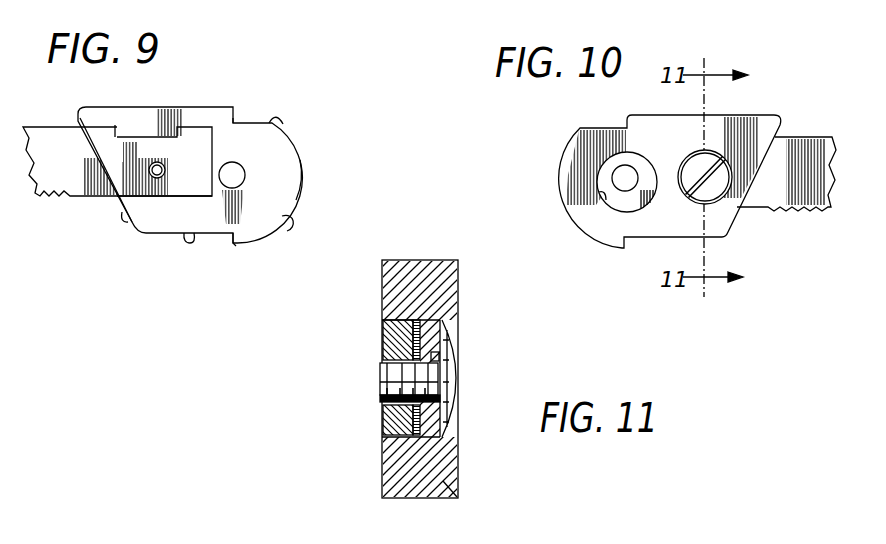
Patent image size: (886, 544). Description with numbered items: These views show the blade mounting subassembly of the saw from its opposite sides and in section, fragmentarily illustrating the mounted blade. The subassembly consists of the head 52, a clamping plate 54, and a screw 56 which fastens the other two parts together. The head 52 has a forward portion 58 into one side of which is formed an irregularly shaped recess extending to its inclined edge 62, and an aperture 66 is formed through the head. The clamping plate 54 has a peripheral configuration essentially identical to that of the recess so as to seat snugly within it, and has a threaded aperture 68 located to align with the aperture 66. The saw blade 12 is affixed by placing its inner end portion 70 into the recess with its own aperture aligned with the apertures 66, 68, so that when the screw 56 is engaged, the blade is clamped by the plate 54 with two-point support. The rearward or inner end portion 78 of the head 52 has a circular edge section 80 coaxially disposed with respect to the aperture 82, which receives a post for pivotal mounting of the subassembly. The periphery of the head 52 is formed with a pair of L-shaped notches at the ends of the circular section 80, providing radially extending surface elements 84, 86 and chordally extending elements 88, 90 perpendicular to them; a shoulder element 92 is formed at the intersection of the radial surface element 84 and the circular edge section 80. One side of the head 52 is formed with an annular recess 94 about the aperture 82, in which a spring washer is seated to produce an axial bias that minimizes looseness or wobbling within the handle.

In FIG. 9, the saw blade 12 is at (66, 203).
In FIG. 10, the saw blade 12 is at (786, 174).
In FIG. 9, the head 52 is at (307, 157).
In FIG. 10, the head 52 is at (670, 181).
In FIG. 11, the head 52 is at (447, 228).
In FIG. 9, the clamping plate 54 is at (110, 151).
In FIG. 11, the clamping plate 54 is at (383, 415).
In FIG. 11, the screw 56 is at (458, 401).
In FIG. 11, the forward portion 58 is at (458, 498).
In FIG. 9, the inclined edge 62 is at (127, 208).
In FIG. 11, the aperture 66 is at (440, 356).
In FIG. 11, the threaded aperture 68 is at (380, 398).
In FIG. 11, the inner end portion 70 is at (412, 338).
In FIG. 9, the rearward or inner end portion 78 is at (292, 190).
In FIG. 9, the circular edge section 80 is at (286, 220).
In FIG. 9, the aperture 82 is at (240, 163).
In FIG. 10, the aperture 82 is at (632, 170).
In FIG. 9, the radially extending surface element 84 is at (236, 243).
In FIG. 9, the radially extending surface element 86 is at (238, 116).
In FIG. 9, the chordally extending element 88 is at (193, 220).
In FIG. 9, the chordally extending element 90 is at (283, 128).
In FIG. 9, the shoulder element 92 is at (236, 246).
In FIG. 10, the annular recess 94 is at (605, 199).